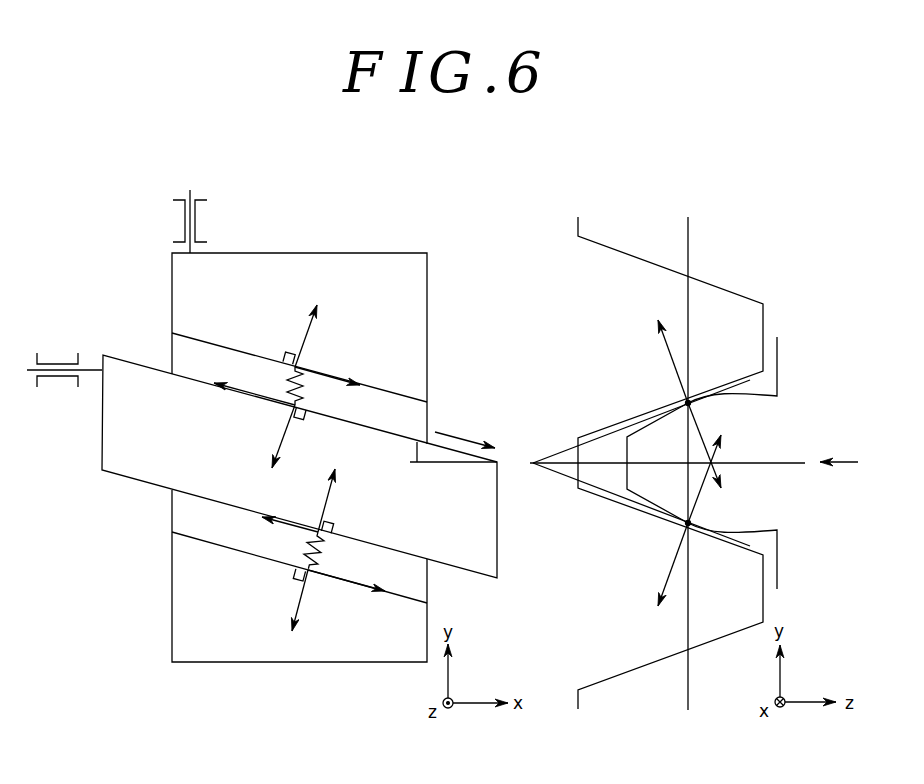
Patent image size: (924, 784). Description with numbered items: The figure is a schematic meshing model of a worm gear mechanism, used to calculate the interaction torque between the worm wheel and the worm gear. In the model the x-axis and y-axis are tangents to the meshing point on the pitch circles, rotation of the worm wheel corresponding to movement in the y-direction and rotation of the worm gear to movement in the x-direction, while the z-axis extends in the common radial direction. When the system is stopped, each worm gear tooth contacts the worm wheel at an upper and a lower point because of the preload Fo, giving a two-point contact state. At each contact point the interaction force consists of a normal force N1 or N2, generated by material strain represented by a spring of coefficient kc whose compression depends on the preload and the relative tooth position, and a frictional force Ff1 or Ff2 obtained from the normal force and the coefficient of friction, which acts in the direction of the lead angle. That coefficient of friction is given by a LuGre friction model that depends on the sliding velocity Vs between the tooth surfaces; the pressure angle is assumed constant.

The normal force at the first contact point N1 is at (731, 418).
The normal force at the second contact point N2 is at (731, 508).
The frictional force at the first contact point Ff1 is at (286, 384).
The frictional force at the second contact point Ff2 is at (319, 551).
The spring coefficient kc is at (297, 466).
The sliding velocity Vs is at (465, 434).
The preload Fo is at (851, 464).